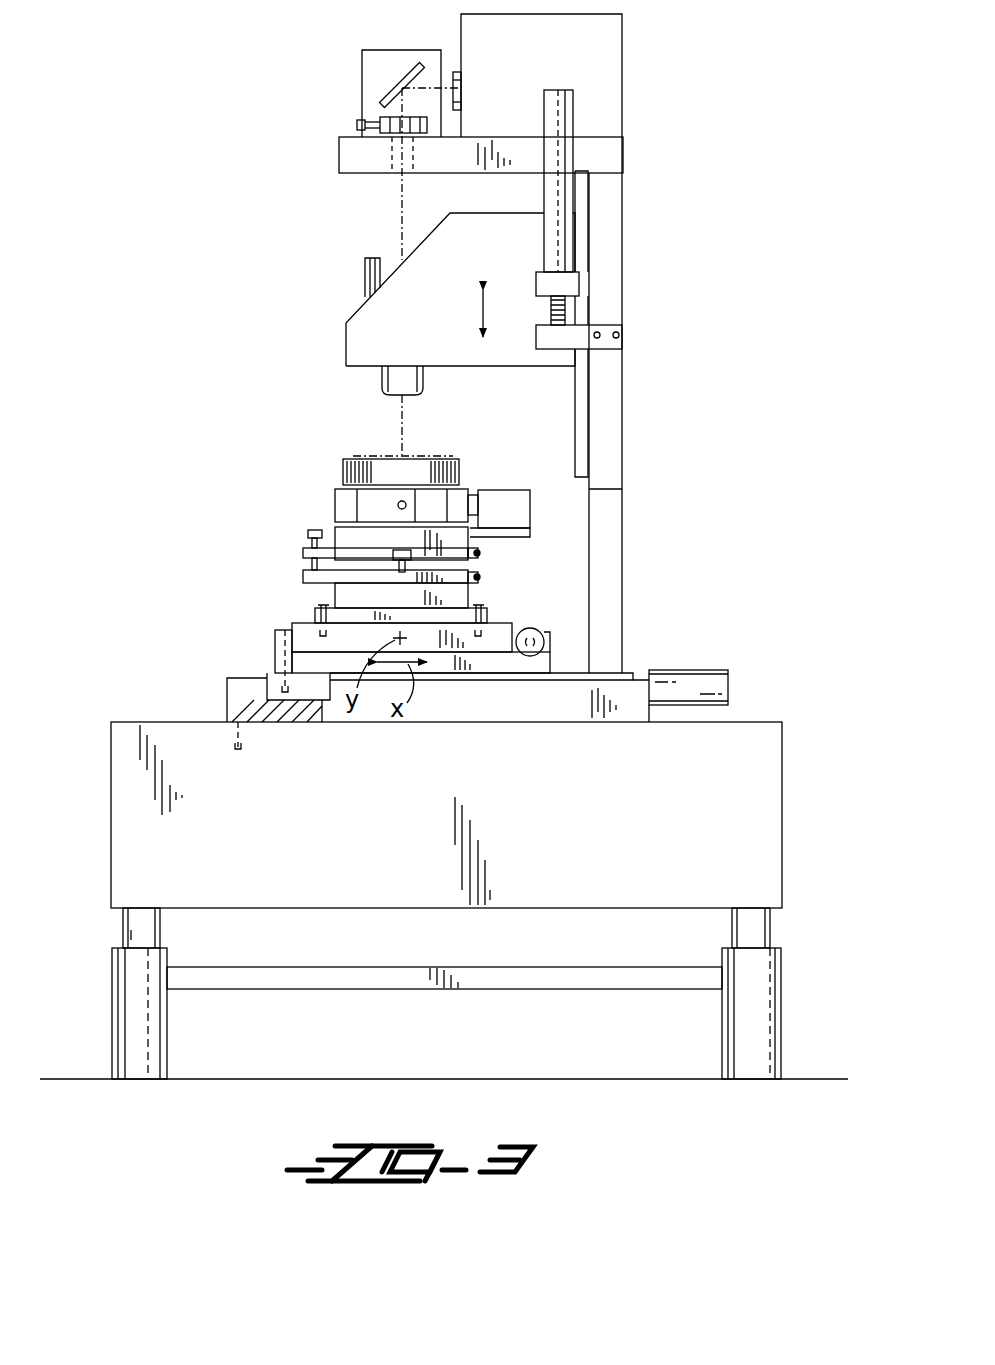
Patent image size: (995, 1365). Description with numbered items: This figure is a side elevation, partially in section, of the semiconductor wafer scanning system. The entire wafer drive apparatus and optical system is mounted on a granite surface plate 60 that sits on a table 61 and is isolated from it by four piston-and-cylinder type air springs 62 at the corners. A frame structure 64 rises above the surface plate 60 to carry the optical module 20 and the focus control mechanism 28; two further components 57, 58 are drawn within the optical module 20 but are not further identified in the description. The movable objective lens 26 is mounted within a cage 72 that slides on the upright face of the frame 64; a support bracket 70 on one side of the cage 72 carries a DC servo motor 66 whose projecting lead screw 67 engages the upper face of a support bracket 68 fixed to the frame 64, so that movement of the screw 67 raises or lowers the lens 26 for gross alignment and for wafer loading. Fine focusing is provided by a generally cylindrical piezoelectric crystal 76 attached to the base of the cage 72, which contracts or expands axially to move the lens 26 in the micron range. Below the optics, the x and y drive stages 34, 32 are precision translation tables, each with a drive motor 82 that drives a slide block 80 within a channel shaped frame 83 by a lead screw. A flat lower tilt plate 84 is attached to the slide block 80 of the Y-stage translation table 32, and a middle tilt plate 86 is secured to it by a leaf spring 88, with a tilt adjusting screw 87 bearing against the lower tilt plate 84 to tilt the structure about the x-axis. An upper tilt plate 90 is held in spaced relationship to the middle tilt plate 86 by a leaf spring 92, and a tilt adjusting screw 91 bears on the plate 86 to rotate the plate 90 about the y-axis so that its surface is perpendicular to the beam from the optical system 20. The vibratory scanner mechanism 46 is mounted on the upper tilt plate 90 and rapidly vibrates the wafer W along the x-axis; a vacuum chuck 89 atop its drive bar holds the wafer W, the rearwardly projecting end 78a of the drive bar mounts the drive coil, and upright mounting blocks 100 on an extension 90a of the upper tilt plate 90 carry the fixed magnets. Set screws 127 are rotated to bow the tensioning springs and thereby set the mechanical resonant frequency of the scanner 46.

The optical module 20 is at (515, 66).
The objective lens 26 is at (382, 378).
The focus control mechanism 28 is at (313, 312).
The Y-stage translation table 32 is at (278, 648).
The x drive stage 34 is at (225, 688).
The vibratory scanner mechanism 46 is at (333, 484).
The mirror 57 is at (383, 93).
The mirror adjustment screw 58 is at (385, 122).
The granite surface plate 60 is at (362, 853).
The table 61 is at (545, 978).
The air springs 62 is at (143, 1043).
The frame structure 64 is at (612, 430).
The DC servo motor 66 is at (557, 208).
The lead screw 67 is at (560, 315).
The support bracket 68 is at (559, 339).
The support bracket 70 is at (565, 282).
The cage 72 is at (400, 323).
The piezoelectric crystal 76 is at (365, 283).
The rearwardly projecting end of drive bar 78a is at (475, 495).
The slide block 80 is at (432, 640).
The drive motor 82 is at (537, 660).
The channel shaped frame 83 is at (298, 663).
The lower tilt plate 84 is at (317, 612).
The middle tilt plate 86 is at (303, 575).
The tilt adjusting screw 87 is at (393, 552).
The leaf spring 88 is at (452, 592).
The vacuum chuck 89 is at (458, 470).
The upper tilt plate 90 is at (303, 553).
The extension of upper tilt plate 90a is at (480, 553).
The tilt adjusting screw 91 is at (305, 533).
The leaf spring 92 is at (480, 578).
The mounting blocks 100 is at (520, 505).
The set screw 127 is at (398, 505).
The wafer W is at (385, 452).